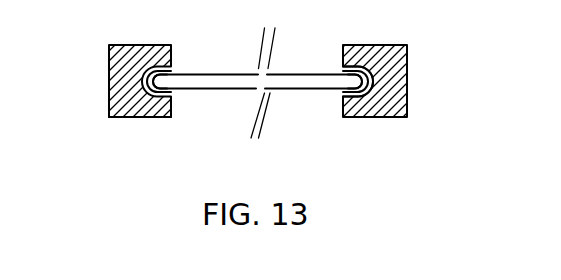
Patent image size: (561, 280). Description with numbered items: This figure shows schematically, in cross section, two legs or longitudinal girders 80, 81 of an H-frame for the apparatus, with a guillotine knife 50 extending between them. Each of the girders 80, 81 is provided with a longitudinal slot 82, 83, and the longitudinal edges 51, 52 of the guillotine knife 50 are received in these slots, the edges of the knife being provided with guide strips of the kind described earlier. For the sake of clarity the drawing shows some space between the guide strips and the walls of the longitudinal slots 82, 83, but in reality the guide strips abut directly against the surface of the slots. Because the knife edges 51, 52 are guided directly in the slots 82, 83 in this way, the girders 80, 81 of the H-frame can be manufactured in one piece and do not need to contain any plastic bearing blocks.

The guillotine knife 50 is at (205, 73).
The longitudinal edge of guillotine knife 51 is at (348, 93).
The longitudinal edge of guillotine knife 52 is at (166, 84).
The longitudinal girder 80 is at (397, 58).
The longitudinal girder 81 is at (118, 56).
The longitudinal slot 82 is at (373, 86).
The longitudinal slot 83 is at (121, 114).